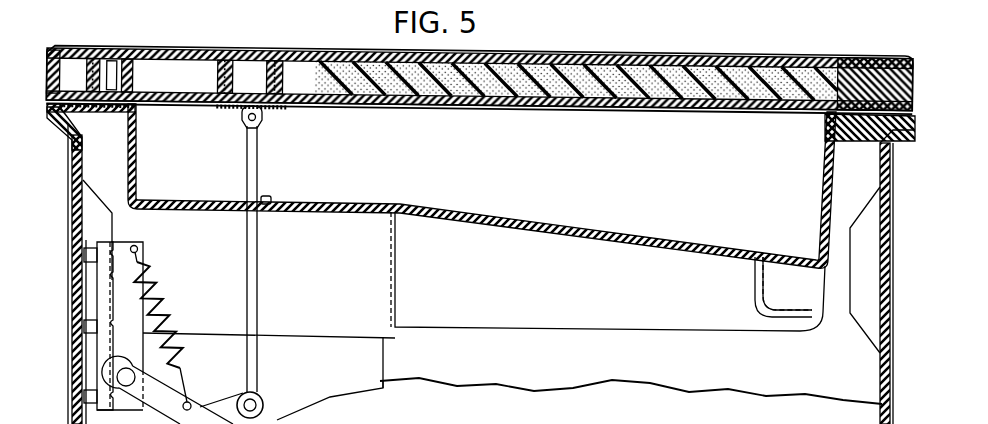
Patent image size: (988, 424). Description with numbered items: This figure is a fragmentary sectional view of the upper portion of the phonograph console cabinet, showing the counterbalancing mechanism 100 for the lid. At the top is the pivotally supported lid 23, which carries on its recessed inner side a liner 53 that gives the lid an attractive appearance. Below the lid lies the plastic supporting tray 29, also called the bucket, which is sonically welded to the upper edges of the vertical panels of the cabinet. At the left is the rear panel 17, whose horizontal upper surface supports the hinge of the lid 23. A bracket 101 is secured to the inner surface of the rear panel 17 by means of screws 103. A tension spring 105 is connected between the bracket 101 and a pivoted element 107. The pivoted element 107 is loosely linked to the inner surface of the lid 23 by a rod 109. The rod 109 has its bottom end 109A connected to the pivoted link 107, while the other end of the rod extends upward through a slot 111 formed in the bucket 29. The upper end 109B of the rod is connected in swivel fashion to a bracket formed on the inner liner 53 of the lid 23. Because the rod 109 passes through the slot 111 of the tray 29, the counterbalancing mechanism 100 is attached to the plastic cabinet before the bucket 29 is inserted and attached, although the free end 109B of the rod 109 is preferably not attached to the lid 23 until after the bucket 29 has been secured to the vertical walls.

The lid 23 is at (479, 79).
The liner 53 is at (483, 106).
The plastic supporting tray 29 is at (473, 212).
The vertical side 17 is at (72, 333).
The screws 103 is at (83, 240).
The bracket 101 is at (103, 287).
The pivoted element 107 is at (123, 245).
The tension spring 105 is at (152, 303).
The counterbalancing mechanism 100 is at (231, 321).
The rod 109 is at (253, 295).
The upper end of the rod 109B is at (264, 112).
The bottom end of the rod 109A is at (263, 393).
The slot 111 is at (266, 199).